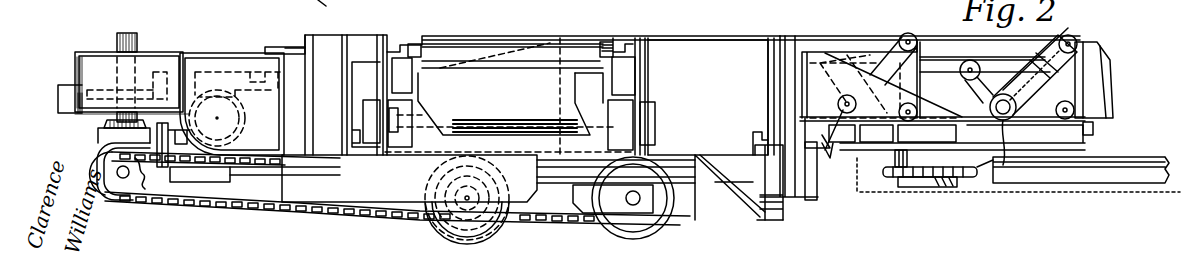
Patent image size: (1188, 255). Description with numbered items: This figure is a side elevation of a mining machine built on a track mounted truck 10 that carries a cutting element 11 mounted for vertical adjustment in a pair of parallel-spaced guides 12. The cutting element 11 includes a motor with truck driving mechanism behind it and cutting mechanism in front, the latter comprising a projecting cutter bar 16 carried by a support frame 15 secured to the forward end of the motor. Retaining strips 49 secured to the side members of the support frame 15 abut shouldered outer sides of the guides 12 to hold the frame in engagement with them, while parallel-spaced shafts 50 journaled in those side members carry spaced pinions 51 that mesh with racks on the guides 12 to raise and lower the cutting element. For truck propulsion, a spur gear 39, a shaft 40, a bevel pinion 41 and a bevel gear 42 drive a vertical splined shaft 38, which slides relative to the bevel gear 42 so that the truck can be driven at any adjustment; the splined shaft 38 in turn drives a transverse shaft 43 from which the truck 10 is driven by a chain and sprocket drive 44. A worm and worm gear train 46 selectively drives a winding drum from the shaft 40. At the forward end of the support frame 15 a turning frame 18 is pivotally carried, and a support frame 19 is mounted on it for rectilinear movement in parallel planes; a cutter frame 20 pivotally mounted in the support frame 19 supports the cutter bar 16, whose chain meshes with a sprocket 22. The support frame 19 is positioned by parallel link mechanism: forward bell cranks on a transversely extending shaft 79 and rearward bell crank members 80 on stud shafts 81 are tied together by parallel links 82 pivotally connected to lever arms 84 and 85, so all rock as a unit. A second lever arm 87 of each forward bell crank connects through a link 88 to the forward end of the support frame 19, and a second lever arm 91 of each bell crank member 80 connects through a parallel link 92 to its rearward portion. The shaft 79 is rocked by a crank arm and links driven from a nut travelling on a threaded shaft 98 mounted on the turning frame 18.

The track mounted truck 10 is at (698, 199).
The cutting element 11 is at (684, 34).
The guides 12 is at (395, 34).
The cutting mechanism support frame 15 is at (744, 34).
The cutter bar 16 is at (1132, 162).
The turning frame 18 is at (1108, 45).
The support frame 19 is at (828, 158).
The cutter frame 20 is at (892, 152).
The sprocket 22 is at (888, 178).
The vertical splined shaft 38 is at (138, 40).
The spur gear 39 is at (265, 129).
The shaft 40 is at (199, 70).
The bevel pinion 41 is at (166, 70).
The bevel gear 42 is at (94, 97).
The transverse shaft 43 is at (138, 192).
The chain and sprocket drive 44 is at (187, 208).
The worm and worm gear train 46 is at (234, 140).
The retaining strips 49 is at (308, 10).
The shafts 50 is at (476, 118).
The pinions 51 is at (398, 110).
The transversely extending shaft 79 is at (1003, 165).
The bell crank members 80 is at (879, 51).
The stud shafts 81 is at (782, 247).
The parallel links 82 is at (937, 58).
The lever arm 84 is at (979, 74).
The lever arm 85 is at (820, 85).
The second lever arm 87 is at (1070, 38).
The link 88 is at (1070, 84).
The second lever arm 91 is at (885, 42).
The link 92 is at (925, 55).
The threaded shaft 98 is at (995, 82).